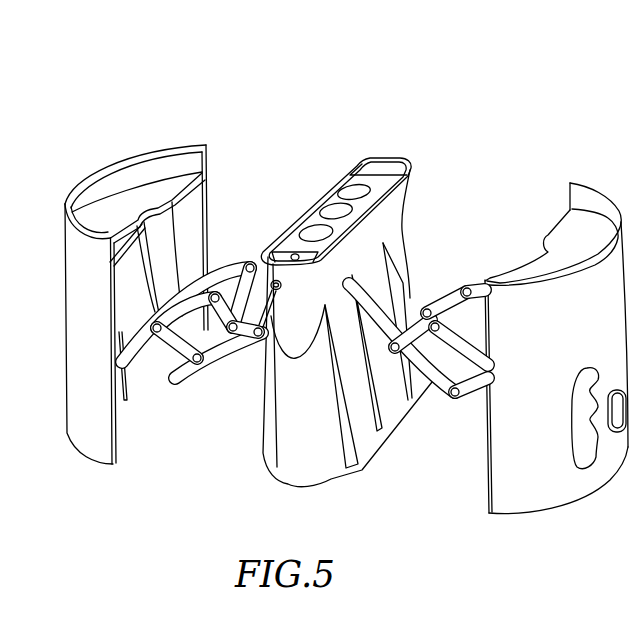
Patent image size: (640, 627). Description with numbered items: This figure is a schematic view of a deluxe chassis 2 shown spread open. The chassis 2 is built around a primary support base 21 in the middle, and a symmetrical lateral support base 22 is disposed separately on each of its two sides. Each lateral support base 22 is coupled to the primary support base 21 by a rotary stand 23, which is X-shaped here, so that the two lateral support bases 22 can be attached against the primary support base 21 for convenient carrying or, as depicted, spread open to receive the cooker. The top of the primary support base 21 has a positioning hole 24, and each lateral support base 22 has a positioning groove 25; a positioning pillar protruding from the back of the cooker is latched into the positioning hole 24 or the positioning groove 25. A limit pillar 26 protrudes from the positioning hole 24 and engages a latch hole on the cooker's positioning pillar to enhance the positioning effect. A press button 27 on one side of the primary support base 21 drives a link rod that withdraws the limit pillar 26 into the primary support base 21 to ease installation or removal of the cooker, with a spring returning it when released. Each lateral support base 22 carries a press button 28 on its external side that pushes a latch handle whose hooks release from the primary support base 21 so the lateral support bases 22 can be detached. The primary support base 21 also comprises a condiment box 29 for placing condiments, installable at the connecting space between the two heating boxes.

The chassis 2 is at (563, 175).
The primary support base 21 is at (288, 474).
The lateral support base 22 is at (85, 440).
The rotary stand 23 is at (199, 379).
The positioning hole 24 is at (384, 168).
The positioning groove 25 is at (126, 196).
The limit pillar 26 is at (292, 253).
The press button 27 is at (273, 330).
The press button 28 is at (613, 428).
The condiment box 29 is at (340, 195).